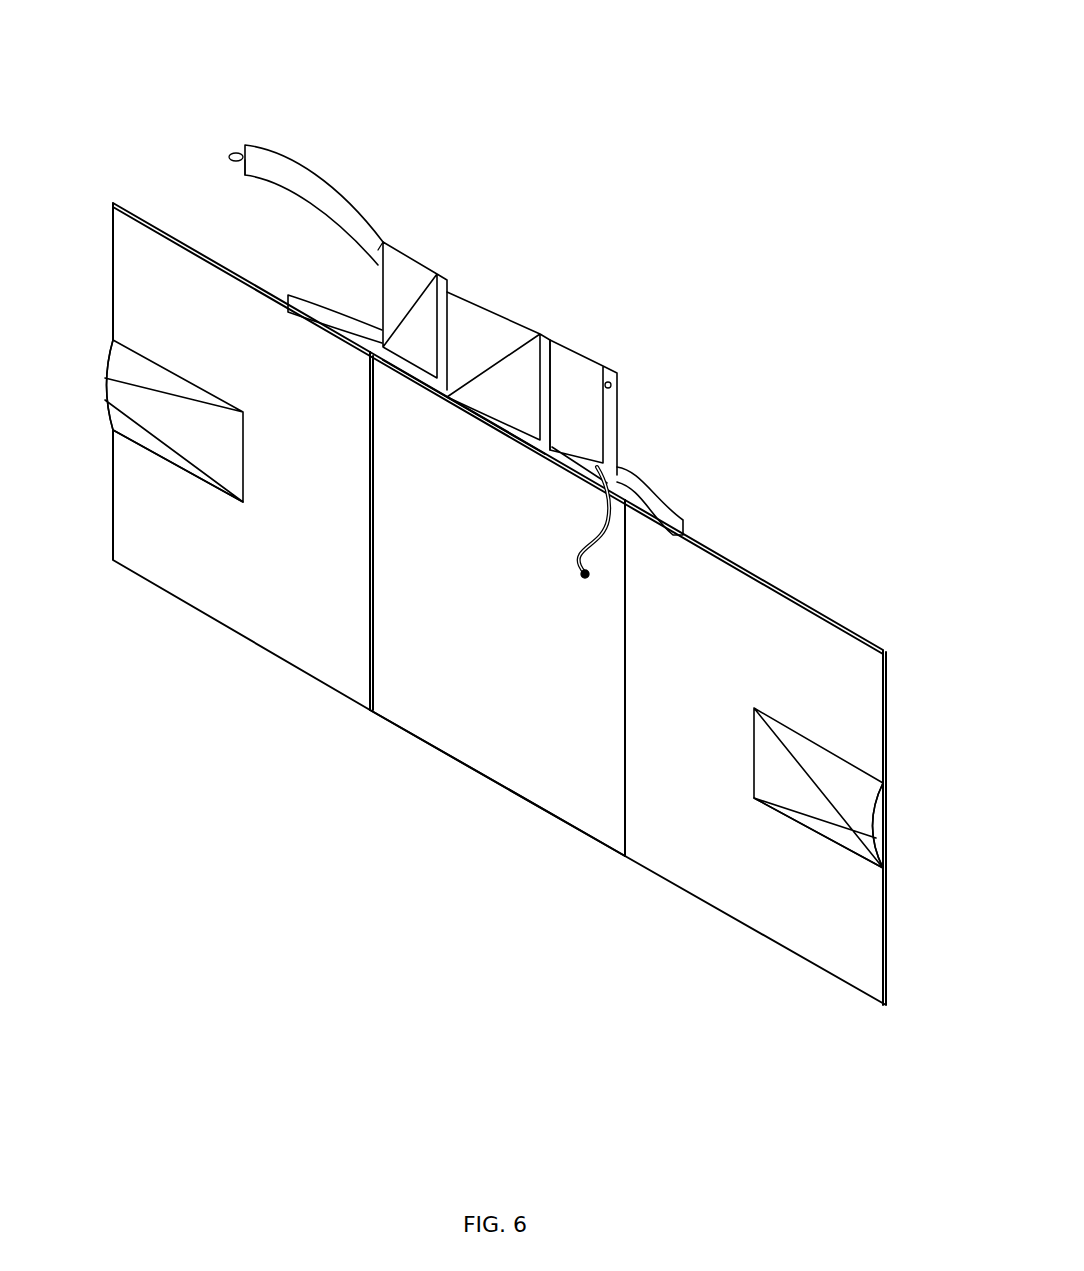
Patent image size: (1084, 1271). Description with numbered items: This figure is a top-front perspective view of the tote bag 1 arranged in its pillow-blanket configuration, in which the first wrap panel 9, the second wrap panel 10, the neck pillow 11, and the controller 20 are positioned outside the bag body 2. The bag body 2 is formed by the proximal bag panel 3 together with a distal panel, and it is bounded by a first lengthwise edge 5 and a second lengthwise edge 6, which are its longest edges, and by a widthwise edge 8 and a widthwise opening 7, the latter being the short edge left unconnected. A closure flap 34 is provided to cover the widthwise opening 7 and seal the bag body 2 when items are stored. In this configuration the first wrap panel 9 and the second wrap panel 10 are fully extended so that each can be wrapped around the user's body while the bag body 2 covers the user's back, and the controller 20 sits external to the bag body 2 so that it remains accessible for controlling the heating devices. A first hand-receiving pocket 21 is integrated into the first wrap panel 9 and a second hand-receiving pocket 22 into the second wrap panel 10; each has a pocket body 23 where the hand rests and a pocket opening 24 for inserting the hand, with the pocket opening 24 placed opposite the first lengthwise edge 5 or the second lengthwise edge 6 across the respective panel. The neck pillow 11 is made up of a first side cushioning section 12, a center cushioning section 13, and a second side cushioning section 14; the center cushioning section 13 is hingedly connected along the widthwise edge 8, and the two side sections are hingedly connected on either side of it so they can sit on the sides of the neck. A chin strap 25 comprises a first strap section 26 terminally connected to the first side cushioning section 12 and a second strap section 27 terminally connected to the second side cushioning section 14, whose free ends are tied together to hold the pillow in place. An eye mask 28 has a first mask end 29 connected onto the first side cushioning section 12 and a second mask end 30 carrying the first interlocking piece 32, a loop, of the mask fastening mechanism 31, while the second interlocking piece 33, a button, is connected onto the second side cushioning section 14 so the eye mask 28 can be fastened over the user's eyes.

The tote bag 1 is at (674, 38).
The bag body 2 is at (500, 538).
The proximal bag panel 3 is at (487, 604).
The first lengthwise edge 5 is at (367, 568).
The second lengthwise edge 6 is at (628, 720).
The widthwise opening 7 is at (511, 795).
The widthwise edge 8 is at (467, 413).
The first wrap panel 9 is at (205, 456).
The second wrap panel 10 is at (792, 752).
The neck pillow 11 is at (449, 363).
The first side cushioning section 12 is at (433, 270).
The center cushioning section 13 is at (515, 316).
The second side cushioning section 14 is at (580, 358).
The controller 20 is at (561, 560).
The first hand-receiving pocket 21 is at (101, 386).
The second hand-receiving pocket 22 is at (887, 831).
The pocket body 23 is at (180, 462).
The pocket opening 24 is at (101, 386).
The chin strap 25 is at (480, 415).
The first strap section 26 is at (318, 318).
The second strap section 27 is at (665, 518).
The eye mask 28 is at (278, 193).
The first mask end 29 is at (377, 261).
The second mask end 30 is at (243, 177).
The mask fastening mechanism 31 is at (448, 230).
The first interlocking piece 32 is at (235, 150).
The second interlocking piece 33 is at (614, 385).
The closure flap 34 is at (573, 568).